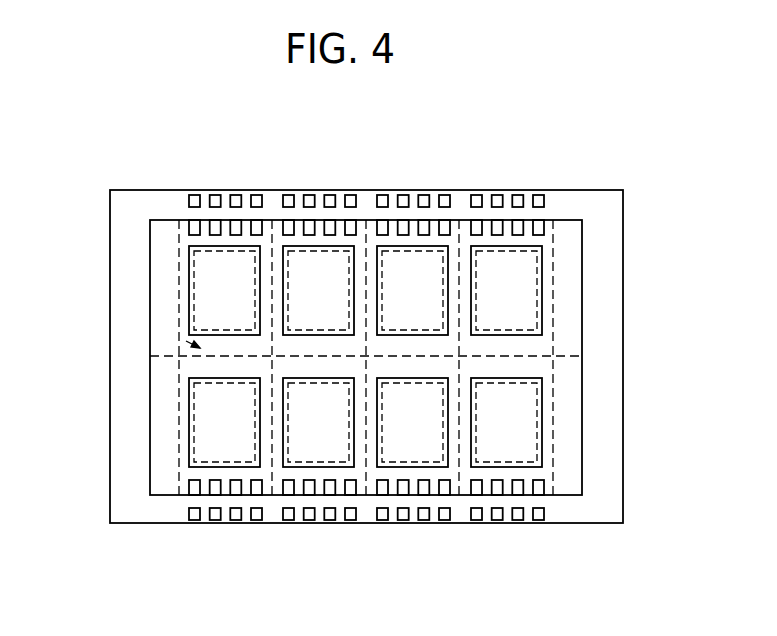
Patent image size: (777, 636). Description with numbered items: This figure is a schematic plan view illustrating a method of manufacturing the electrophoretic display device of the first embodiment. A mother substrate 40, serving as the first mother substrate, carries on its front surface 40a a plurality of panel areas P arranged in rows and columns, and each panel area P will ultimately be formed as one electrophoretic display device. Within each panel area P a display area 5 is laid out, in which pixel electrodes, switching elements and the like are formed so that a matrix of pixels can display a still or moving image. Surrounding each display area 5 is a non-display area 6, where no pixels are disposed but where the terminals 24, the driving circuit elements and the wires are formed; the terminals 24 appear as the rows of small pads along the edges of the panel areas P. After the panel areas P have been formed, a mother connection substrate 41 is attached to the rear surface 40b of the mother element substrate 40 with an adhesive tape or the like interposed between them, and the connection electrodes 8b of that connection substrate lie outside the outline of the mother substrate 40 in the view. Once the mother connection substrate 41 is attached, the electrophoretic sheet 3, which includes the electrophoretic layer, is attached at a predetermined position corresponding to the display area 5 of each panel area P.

The electrophoretic sheet 3 is at (430, 247).
The display area 5 is at (200, 288).
The non-display area 6 is at (183, 243).
The connection electrodes 8b is at (256, 203).
The terminals 24 is at (193, 232).
The mother substrate 40 is at (573, 263).
The front surface 40a is at (573, 390).
The rear surface 40b is at (573, 435).
The mother connection substrate 41 is at (623, 218).
The panel areas P is at (190, 344).